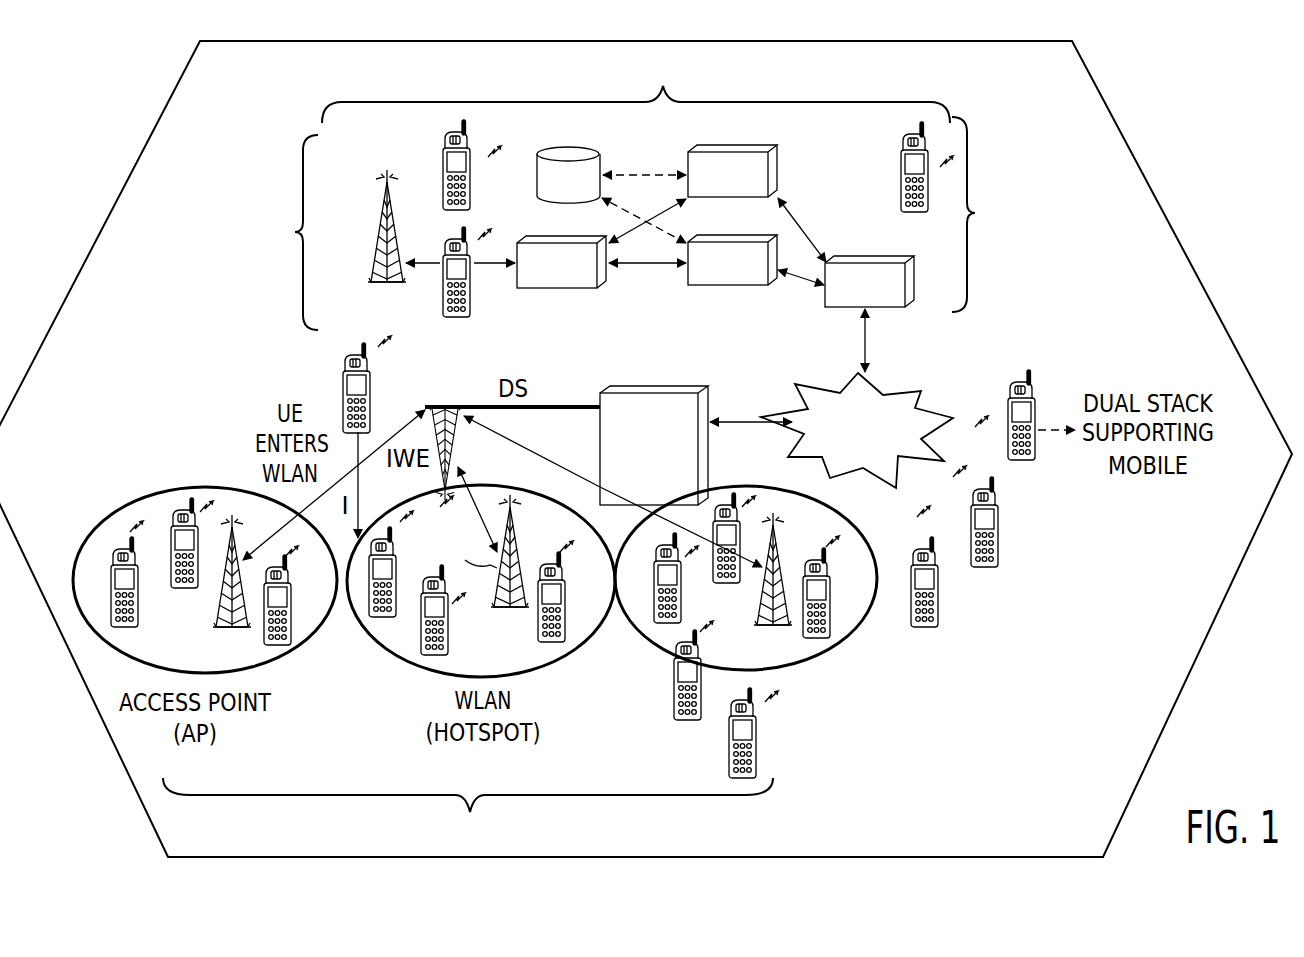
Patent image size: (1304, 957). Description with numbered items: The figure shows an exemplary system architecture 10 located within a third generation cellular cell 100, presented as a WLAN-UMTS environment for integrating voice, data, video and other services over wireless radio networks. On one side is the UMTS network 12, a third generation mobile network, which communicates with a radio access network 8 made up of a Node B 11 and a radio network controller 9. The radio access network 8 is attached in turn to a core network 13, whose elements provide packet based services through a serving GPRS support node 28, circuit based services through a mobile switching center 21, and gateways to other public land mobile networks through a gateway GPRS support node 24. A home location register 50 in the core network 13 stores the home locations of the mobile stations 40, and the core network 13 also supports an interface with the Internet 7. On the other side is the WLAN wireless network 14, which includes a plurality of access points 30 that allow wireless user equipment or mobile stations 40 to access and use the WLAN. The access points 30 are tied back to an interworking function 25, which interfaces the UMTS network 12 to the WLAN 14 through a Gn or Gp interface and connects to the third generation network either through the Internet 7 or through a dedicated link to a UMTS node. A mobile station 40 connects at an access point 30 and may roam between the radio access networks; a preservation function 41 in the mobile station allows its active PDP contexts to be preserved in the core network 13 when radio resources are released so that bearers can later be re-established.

The system architecture 10 is at (1185, 177).
The 3rd Generation Cellular Cell 100 is at (984, 731).
The UMTS network 12 is at (636, 88).
The radio access network 8 is at (296, 232).
The core network 13 is at (978, 214).
The WLAN wireless network 14 is at (468, 810).
The Node B 11 is at (375, 241).
The home location register 50 is at (567, 147).
The mobile switching center 21 is at (778, 175).
The serving GPRS support node 28 is at (705, 286).
The radio network controller 9 is at (568, 289).
The gateway GPRS support node 24 is at (878, 262).
The interworking function 25 is at (573, 402).
The Internet 7 is at (830, 379).
The preservation function 41 is at (373, 399).
The mobile station 40 is at (341, 372).
The access point 30 is at (217, 630).